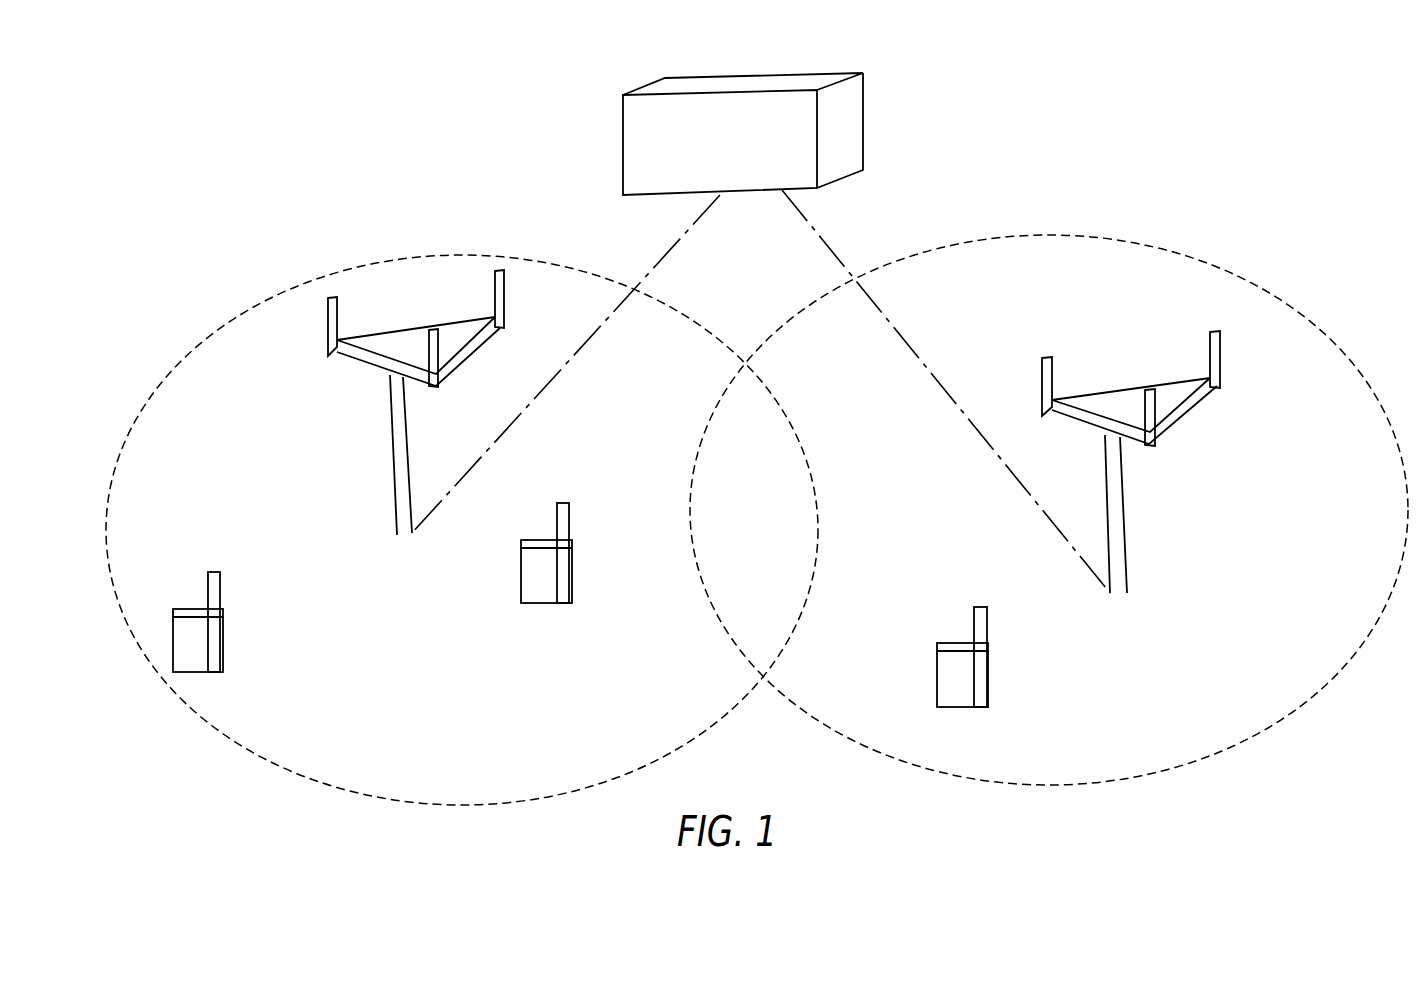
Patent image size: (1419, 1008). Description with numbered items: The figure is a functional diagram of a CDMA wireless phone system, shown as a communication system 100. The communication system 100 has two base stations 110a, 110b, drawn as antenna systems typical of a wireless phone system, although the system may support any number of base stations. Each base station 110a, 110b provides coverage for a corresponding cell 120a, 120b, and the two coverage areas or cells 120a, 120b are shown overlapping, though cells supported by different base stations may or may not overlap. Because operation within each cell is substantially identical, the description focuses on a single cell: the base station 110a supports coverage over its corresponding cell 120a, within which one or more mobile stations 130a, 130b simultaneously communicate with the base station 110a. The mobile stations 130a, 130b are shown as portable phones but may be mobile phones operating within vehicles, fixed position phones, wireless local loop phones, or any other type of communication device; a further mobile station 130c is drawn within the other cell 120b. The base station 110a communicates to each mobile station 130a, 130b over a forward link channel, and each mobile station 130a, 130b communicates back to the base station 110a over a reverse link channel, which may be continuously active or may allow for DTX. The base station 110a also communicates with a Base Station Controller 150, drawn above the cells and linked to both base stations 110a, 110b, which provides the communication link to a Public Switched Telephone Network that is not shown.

The communication system 100 is at (948, 159).
The Base Station Controller (BSC) 150 is at (743, 134).
The base station 110a is at (377, 367).
The base station 110b is at (1182, 424).
The cell 120a is at (462, 530).
The cell 120b is at (1049, 510).
The Mobile Station (MS) 130a is at (195, 673).
The Mobile Station (MS) 130b is at (545, 603).
The mobile station 130c is at (955, 707).